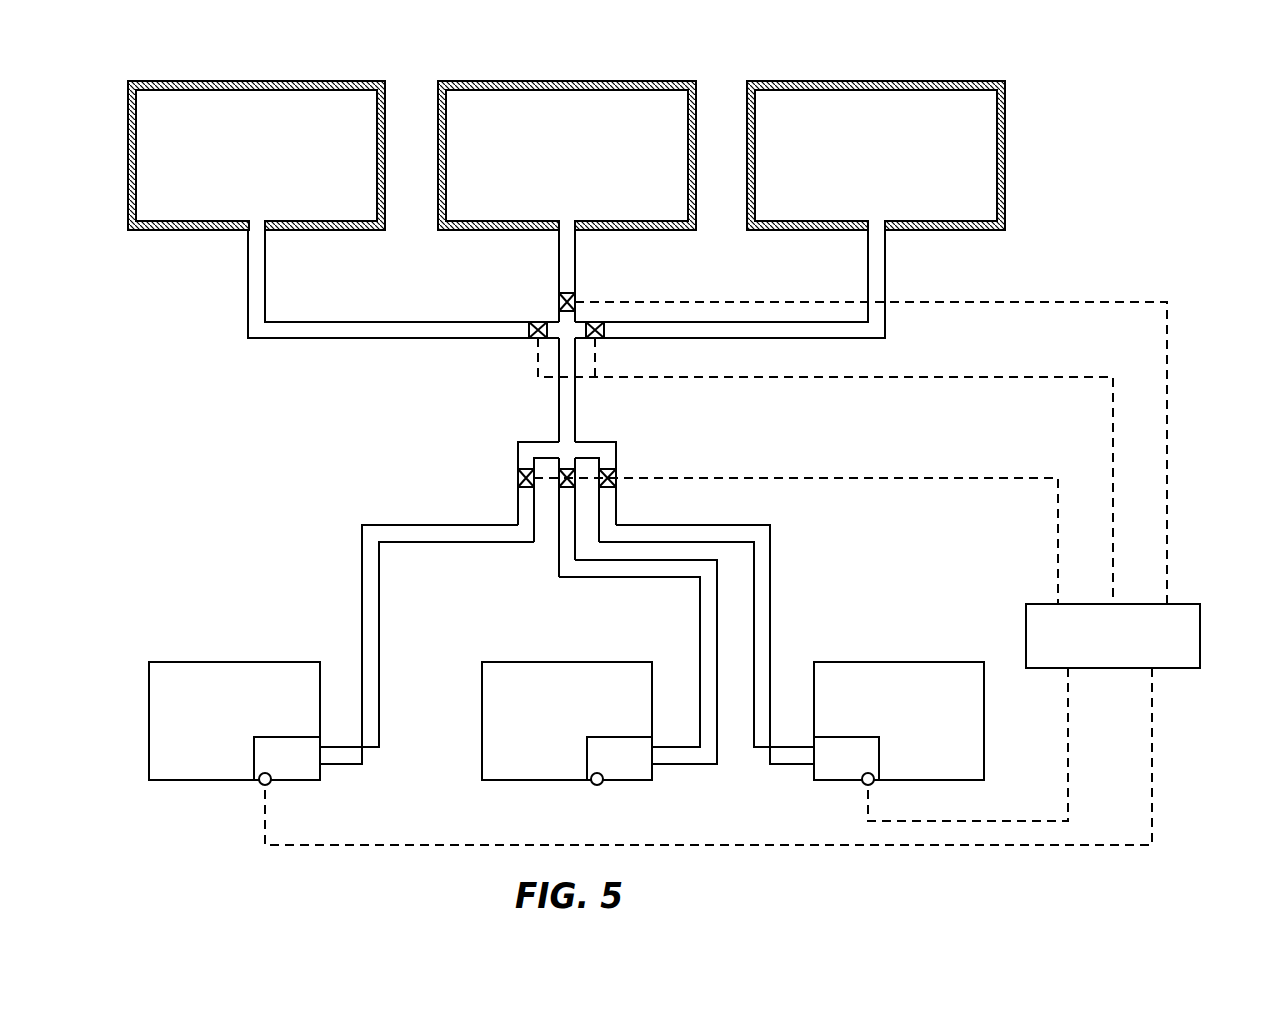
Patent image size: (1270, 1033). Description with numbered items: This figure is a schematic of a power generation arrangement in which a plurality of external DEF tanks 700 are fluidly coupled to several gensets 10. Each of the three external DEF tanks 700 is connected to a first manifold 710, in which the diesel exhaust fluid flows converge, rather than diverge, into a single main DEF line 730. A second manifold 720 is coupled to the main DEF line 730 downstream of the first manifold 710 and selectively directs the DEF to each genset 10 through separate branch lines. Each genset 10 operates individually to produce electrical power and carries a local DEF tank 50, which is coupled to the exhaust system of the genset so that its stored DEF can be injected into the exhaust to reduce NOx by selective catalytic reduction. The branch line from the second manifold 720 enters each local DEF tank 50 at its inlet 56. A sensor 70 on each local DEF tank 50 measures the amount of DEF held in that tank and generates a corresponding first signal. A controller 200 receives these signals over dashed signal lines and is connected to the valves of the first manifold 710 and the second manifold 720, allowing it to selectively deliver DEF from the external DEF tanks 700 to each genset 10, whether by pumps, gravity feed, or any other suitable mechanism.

The external DEF tank 700 is at (260, 81).
The first manifold 710 is at (500, 358).
The main DEF line 730 is at (558, 417).
The second manifold 720 is at (630, 450).
The inlet 56 is at (322, 756).
The genset 10 is at (140, 703).
The local DEF tank 50 is at (263, 749).
The sensor 70 is at (272, 783).
The controller 200 is at (1185, 604).